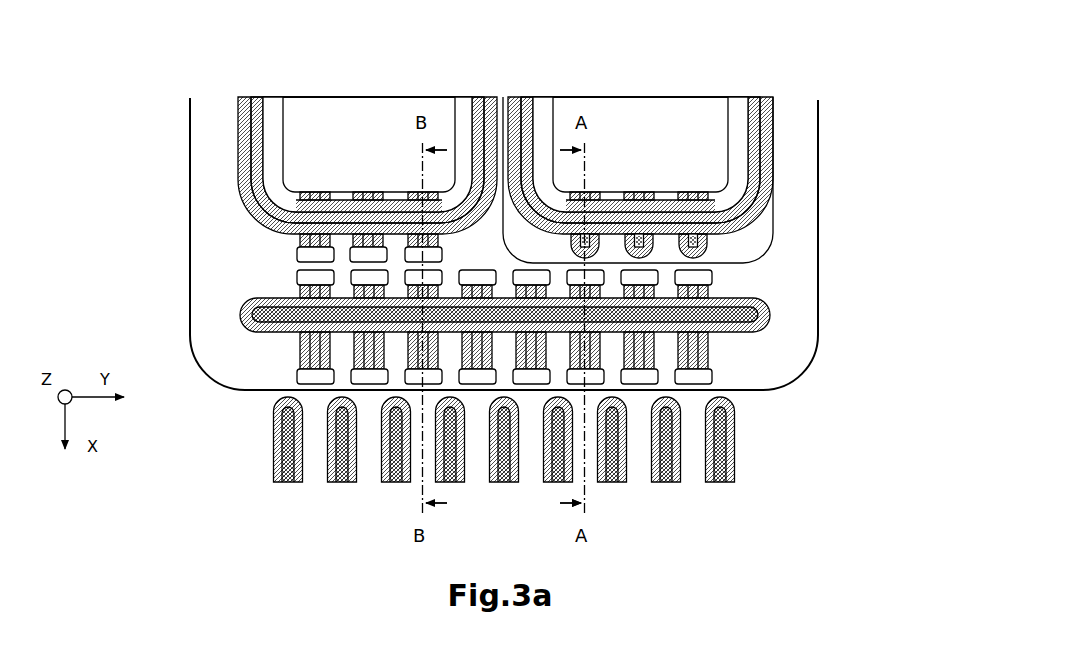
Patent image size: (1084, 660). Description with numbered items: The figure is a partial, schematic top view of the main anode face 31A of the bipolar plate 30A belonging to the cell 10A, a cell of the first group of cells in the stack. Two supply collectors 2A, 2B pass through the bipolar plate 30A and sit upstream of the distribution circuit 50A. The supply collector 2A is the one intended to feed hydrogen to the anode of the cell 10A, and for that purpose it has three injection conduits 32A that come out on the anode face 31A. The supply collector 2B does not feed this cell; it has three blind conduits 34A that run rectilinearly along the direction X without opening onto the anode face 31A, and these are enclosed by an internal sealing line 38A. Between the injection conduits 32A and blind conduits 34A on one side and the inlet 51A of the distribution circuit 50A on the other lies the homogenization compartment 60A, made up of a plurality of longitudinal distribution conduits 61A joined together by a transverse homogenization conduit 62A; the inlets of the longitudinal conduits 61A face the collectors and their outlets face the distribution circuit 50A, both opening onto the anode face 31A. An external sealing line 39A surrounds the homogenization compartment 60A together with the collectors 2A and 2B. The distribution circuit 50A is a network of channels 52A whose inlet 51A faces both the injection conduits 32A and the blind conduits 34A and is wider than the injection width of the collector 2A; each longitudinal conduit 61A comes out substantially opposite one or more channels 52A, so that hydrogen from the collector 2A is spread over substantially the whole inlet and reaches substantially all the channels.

The cell 10A is at (126, 70).
The bipolar plate 30A is at (157, 121).
The anode face 31A is at (216, 192).
The external sealing line 39A is at (818, 119).
The supply collector 2A is at (367, 165).
The supply collector 2B is at (640, 165).
The injection conduits 32A is at (295, 254).
The internal sealing line 38A is at (773, 228).
The blind conduits 34A is at (709, 243).
The homogenization compartment 60A is at (847, 320).
The longitudinal distribution conduits 61A is at (717, 291).
The transverse homogenization conduit 62A is at (762, 333).
The distribution circuit 50A is at (803, 458).
The inlet 51A is at (745, 395).
The channels 52A is at (639, 472).